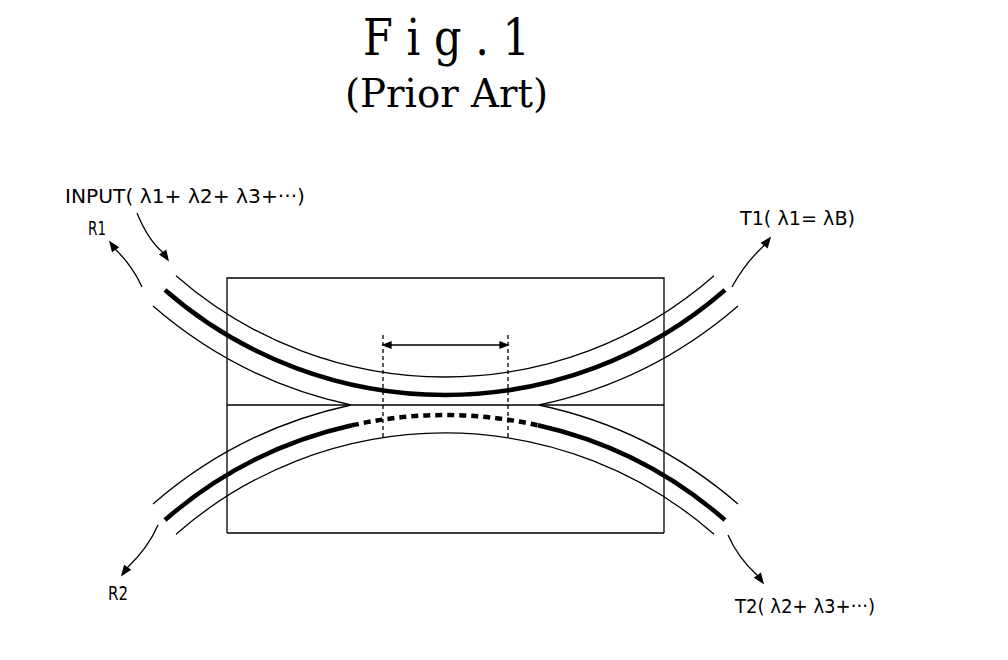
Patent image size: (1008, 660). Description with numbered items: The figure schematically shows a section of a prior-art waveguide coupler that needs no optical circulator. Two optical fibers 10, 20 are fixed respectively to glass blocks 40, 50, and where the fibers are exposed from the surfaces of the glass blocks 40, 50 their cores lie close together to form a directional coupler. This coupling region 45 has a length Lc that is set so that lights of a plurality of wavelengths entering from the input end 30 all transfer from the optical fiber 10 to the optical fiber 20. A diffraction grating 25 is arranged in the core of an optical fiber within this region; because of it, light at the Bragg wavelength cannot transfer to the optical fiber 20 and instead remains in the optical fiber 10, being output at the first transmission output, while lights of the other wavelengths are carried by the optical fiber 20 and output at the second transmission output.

The optical fiber 10 is at (444, 340).
The optical fiber 20 is at (462, 469).
The diffraction grating 25 is at (366, 422).
The input end 30 is at (182, 327).
The glass block 40 is at (445, 408).
The coupling region 45 is at (470, 345).
The glass block 50 is at (445, 533).